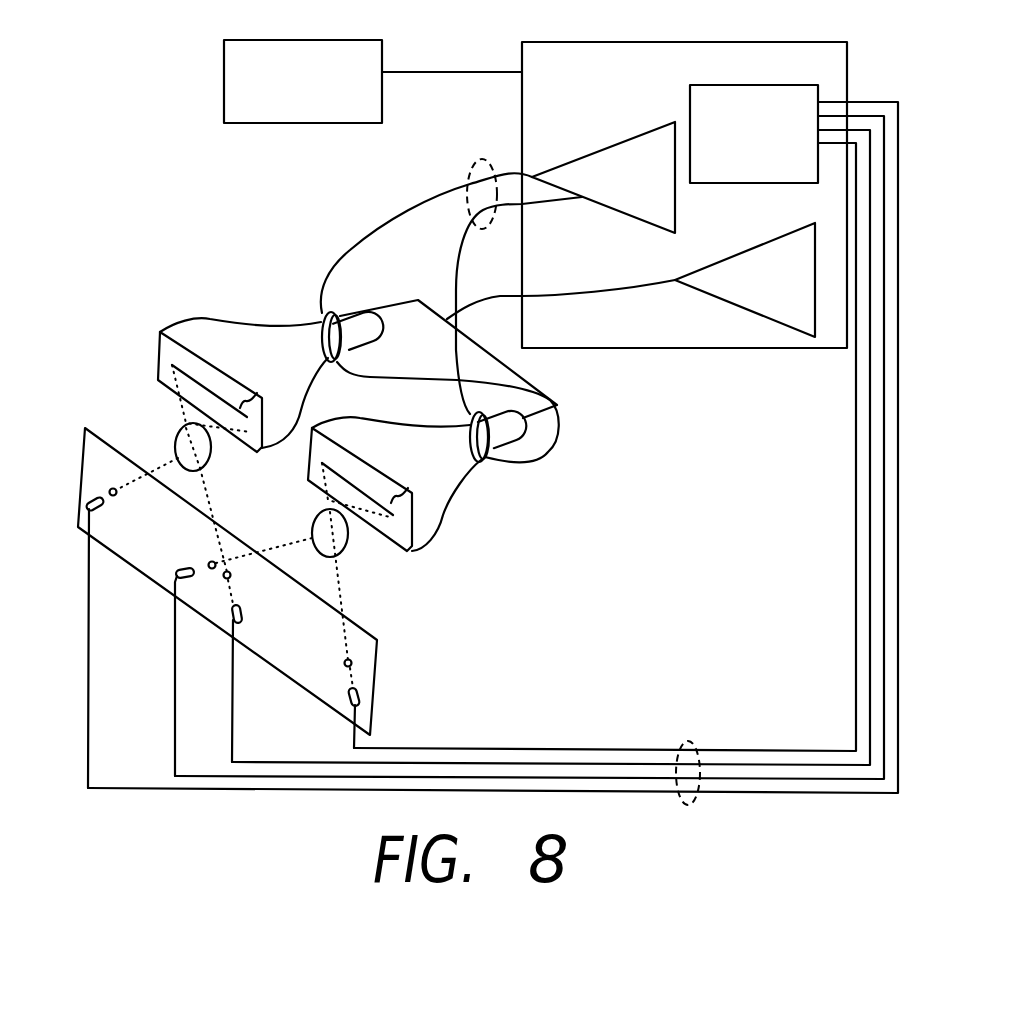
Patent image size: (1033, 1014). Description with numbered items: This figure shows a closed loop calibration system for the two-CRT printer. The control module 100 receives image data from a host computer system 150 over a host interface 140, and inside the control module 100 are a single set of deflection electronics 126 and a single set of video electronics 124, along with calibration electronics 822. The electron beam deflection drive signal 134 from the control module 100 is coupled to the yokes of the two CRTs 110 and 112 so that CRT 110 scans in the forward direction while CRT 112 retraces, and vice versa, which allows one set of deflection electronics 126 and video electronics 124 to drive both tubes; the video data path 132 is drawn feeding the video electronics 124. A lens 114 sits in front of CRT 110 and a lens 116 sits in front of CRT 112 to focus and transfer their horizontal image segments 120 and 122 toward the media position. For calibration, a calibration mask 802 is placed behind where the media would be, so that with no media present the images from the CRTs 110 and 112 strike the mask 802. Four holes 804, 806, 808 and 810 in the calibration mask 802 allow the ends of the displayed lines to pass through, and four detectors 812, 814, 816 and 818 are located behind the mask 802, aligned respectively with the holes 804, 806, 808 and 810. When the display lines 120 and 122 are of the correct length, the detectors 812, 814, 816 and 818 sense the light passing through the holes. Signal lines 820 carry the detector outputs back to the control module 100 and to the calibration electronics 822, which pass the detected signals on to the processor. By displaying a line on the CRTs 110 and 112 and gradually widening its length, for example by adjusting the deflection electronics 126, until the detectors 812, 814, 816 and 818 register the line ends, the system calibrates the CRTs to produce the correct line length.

The control module 100 is at (590, 348).
The CRT 110 is at (276, 356).
The CRT 112 is at (401, 451).
The lens 114 is at (212, 443).
The lens 116 is at (311, 526).
The horizontal image segment 120 is at (258, 394).
The image segment 122 is at (407, 490).
The video electronics 124 is at (731, 259).
The deflection electronics 126 is at (594, 150).
The video data line 132 is at (620, 292).
The electron beam deflection drive signal 134 is at (470, 158).
The host interface 140 is at (555, 41).
The host computer system 150 is at (352, 39).
The calibration mask 802 is at (410, 634).
The hole 804 is at (114, 489).
The hole 806 is at (209, 563).
The hole 808 is at (231, 577).
The hole 810 is at (352, 665).
The detector 812 is at (86, 501).
The detector 814 is at (182, 578).
The detector 816 is at (244, 618).
The detector 818 is at (362, 705).
The signal lines 820 is at (720, 722).
The calibration electronics 822 is at (690, 94).